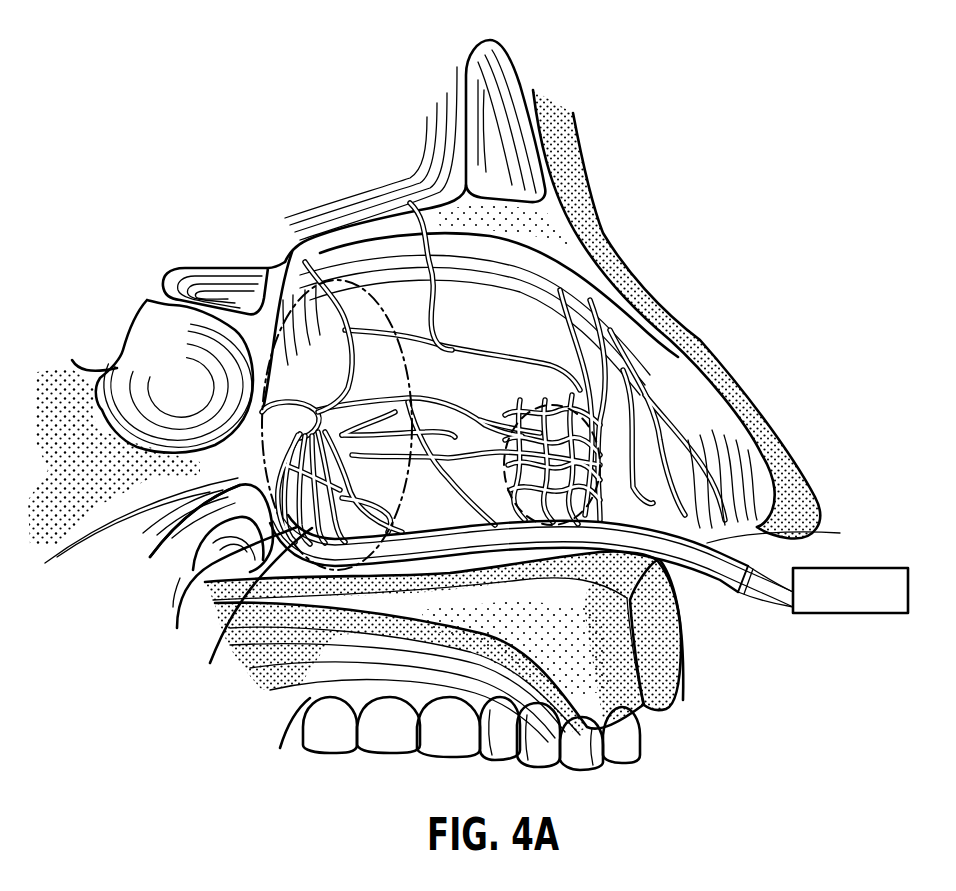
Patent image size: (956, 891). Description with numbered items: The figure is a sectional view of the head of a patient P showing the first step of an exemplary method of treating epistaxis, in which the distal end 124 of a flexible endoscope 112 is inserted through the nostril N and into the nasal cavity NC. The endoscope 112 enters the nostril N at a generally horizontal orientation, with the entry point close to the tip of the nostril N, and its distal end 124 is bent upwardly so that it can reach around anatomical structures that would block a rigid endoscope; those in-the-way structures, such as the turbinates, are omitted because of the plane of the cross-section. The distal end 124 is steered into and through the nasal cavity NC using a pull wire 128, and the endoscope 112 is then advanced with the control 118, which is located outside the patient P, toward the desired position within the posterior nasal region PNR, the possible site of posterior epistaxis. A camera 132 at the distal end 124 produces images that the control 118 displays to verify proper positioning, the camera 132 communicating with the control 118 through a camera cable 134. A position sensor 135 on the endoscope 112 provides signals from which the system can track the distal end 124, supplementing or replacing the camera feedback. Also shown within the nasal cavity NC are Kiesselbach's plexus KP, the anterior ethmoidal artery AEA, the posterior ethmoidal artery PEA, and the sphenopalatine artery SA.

The endoscope 112 is at (650, 525).
The control 118 is at (870, 614).
The distal end 124 is at (173, 532).
The pull wire 128 is at (773, 568).
The camera 132 is at (223, 596).
The camera cable 134 is at (763, 598).
The position sensor 135 is at (249, 612).
The anterior ethmoidal artery AEA is at (410, 205).
The posterior ethmoidal artery PEA is at (305, 260).
The posterior nasal region PNR is at (235, 297).
The sphenopalatine artery SA is at (270, 405).
The Kiesselbach's plexus KP is at (560, 405).
The nasal cavity NC is at (499, 295).
The patient P is at (670, 156).
The nostril N is at (675, 566).